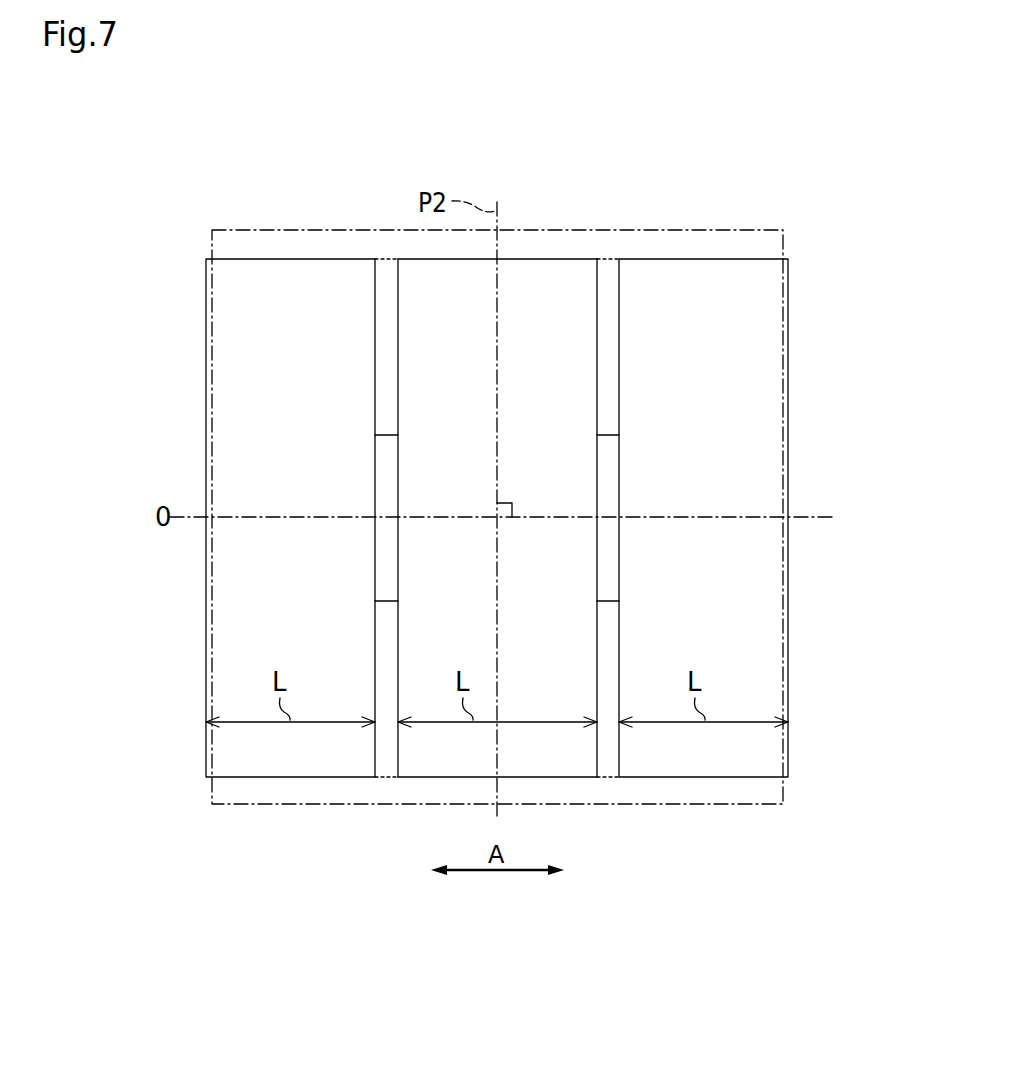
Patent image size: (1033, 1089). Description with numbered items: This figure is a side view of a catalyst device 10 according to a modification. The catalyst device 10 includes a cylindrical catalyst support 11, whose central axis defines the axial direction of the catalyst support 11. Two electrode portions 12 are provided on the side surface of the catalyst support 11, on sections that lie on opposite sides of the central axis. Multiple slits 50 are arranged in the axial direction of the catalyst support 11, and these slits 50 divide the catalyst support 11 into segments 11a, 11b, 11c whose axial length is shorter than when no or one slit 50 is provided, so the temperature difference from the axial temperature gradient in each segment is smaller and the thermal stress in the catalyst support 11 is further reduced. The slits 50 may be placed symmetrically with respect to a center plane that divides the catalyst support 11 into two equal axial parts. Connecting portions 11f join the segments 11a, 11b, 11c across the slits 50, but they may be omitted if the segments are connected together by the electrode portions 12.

The catalyst device 10 is at (141, 260).
The catalyst support 11 is at (495, 483).
The segment 11a is at (228, 400).
The segment 11b is at (540, 483).
The segment 11c is at (772, 422).
The connecting portion 11f is at (390, 472).
The electrode portion 12 is at (622, 230).
The slit 50 is at (382, 395).